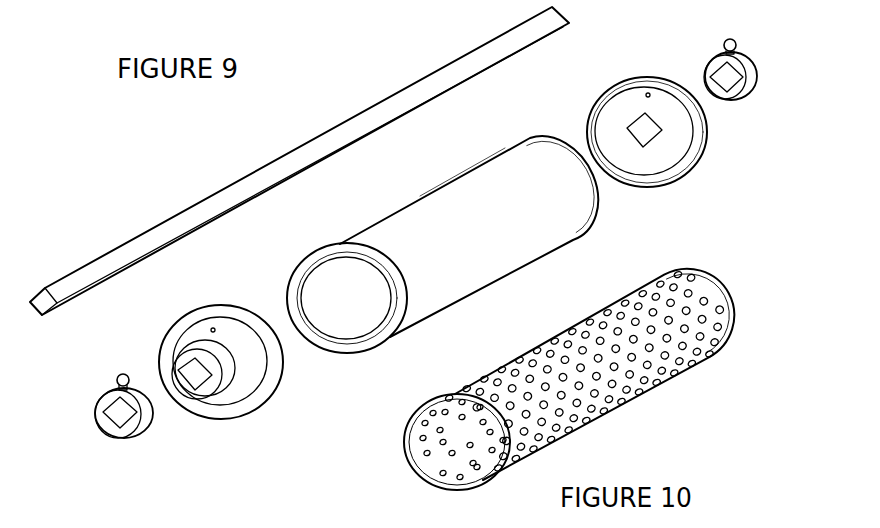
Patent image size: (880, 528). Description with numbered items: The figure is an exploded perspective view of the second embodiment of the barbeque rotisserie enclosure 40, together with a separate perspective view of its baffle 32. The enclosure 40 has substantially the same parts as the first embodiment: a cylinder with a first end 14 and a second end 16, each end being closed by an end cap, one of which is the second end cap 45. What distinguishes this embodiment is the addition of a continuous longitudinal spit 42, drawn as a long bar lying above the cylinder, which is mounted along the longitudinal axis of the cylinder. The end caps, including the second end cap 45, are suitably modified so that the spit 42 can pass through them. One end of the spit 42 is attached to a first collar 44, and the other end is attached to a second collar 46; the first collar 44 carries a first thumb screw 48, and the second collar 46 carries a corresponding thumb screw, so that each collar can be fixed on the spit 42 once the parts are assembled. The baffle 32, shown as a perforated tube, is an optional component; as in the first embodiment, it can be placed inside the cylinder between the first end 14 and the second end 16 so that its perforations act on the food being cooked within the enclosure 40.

In FIG. 9, the first end 14 is at (600, 212).
In FIG. 9, the second end 16 is at (427, 318).
In FIG. 10, the baffle 32 is at (647, 390).
In FIG. 9, the barbeque rotisserie enclosure 40 is at (149, 163).
In FIG. 9, the continuous longitudinal spit 42 is at (357, 116).
In FIG. 9, the first collar 44 is at (757, 78).
In FIG. 9, the second end cap 45 is at (252, 386).
In FIG. 9, the second collar 46 is at (116, 378).
In FIG. 9, the first thumb screw 48 is at (738, 44).